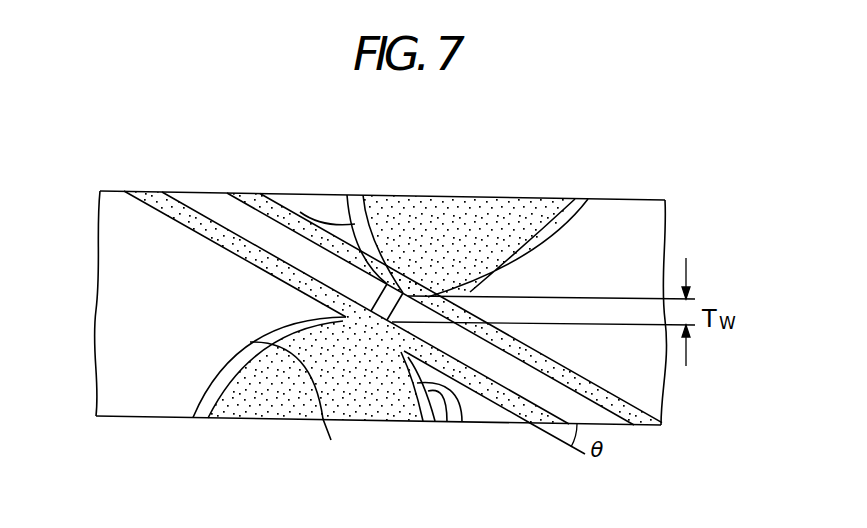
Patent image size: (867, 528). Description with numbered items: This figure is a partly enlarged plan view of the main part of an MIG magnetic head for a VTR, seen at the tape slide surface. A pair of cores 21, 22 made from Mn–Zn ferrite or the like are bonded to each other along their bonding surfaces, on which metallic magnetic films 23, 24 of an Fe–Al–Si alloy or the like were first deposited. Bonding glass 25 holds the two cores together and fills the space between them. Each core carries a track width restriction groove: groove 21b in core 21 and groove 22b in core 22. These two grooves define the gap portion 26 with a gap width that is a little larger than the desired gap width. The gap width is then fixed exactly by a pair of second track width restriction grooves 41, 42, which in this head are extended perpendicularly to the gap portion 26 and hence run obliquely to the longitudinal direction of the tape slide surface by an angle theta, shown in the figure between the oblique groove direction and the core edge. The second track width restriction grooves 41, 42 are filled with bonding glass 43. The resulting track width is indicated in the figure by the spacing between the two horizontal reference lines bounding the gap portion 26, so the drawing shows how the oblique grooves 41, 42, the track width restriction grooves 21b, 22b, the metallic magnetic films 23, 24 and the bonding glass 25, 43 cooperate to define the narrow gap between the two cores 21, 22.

The core 21 is at (192, 381).
The core 22 is at (620, 217).
The track width restriction groove 21b is at (366, 210).
The track width restriction groove 22b is at (508, 261).
The metallic magnetic film 23 is at (303, 212).
The metallic magnetic film 24 is at (556, 220).
The bonding glass 25 is at (428, 222).
The gap portion 26 is at (388, 283).
The second track width restriction groove 41 is at (262, 203).
The second track width restriction groove 42 is at (192, 204).
The bonding glass 43 is at (498, 396).